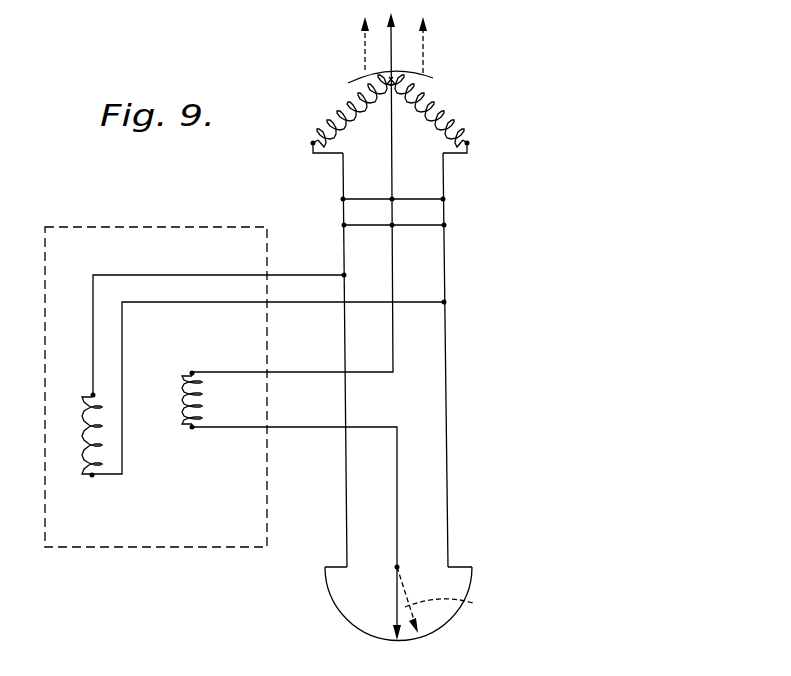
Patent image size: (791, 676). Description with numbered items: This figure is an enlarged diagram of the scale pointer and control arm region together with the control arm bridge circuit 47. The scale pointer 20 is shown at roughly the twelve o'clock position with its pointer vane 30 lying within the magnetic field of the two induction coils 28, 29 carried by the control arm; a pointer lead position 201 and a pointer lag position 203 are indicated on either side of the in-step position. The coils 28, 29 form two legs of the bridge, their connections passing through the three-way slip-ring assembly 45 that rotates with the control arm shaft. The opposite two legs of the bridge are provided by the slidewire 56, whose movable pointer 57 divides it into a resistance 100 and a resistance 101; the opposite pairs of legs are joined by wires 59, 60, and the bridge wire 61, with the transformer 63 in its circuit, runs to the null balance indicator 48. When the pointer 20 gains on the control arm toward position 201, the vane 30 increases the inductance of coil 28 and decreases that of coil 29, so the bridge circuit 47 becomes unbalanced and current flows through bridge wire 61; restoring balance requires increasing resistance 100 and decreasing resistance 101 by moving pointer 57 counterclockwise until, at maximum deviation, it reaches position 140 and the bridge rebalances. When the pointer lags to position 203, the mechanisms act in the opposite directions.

The scale pointer 20 is at (393, 52).
The pointer lead position 201 is at (363, 47).
The pointer lag position 203 is at (424, 44).
The pointer vane 30 is at (435, 78).
The induction coil 28 is at (345, 109).
The induction coil 29 is at (447, 127).
The slip-ring assembly 45 is at (423, 204).
The control arm bridge circuit 47 is at (454, 395).
The null balance indicator 48 is at (165, 211).
The slidewire 56 is at (478, 569).
The movable pointer 57 is at (397, 598).
The wire 59 is at (346, 478).
The wire 60 is at (448, 456).
The bridge wire 61 is at (434, 335).
The transformer 63 is at (203, 398).
The resistance 100 is at (342, 614).
The resistance 101 is at (448, 620).
The position of maximum counterclockwise movement 140 is at (458, 607).